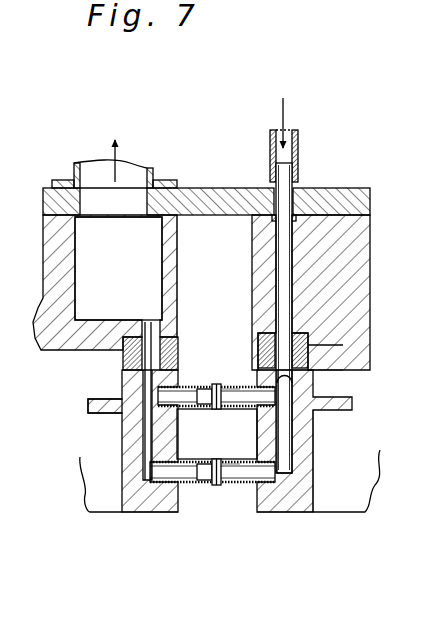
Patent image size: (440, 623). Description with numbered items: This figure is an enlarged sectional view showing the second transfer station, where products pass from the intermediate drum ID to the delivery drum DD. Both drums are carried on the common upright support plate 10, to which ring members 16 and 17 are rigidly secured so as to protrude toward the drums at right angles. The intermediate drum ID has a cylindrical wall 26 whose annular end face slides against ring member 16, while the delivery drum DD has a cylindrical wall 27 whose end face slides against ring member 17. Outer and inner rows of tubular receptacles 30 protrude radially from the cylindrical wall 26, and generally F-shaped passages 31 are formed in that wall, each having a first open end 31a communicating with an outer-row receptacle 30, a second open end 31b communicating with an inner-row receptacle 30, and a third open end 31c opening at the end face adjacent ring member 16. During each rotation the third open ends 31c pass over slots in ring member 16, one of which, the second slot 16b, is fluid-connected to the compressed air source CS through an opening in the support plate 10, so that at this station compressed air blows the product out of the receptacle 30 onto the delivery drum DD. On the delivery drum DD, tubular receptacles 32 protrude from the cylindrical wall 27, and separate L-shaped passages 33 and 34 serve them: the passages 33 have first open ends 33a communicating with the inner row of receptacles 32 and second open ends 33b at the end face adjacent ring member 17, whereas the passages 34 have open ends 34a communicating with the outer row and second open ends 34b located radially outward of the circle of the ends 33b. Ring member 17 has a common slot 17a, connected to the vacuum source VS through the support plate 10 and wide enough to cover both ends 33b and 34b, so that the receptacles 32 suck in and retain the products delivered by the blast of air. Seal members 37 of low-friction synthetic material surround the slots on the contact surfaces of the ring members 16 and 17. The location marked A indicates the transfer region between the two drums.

The support plate 10 is at (347, 197).
The ring member 16 is at (331, 291).
The second slot 16b is at (283, 245).
The ring member 17 is at (35, 293).
The common slot 17a is at (181, 254).
The cylindrical wall 26 is at (300, 487).
The cylindrical wall 27 is at (127, 513).
The tubular receptacles 30 is at (245, 378).
The F-shaped passages 31 is at (313, 418).
The first open end 31a is at (315, 454).
The second open end 31b is at (313, 372).
The third open end 31c is at (322, 370).
The tubular receptacles 32 is at (197, 380).
The passages 33 is at (143, 430).
The first open end 33a is at (138, 513).
The second open end 33b is at (120, 385).
The passages 34 is at (176, 372).
The open end 34a is at (217, 434).
The second open end 34b is at (146, 348).
The seal members 37 is at (132, 337).
The coupling A is at (215, 487).
The vacuum source VS is at (120, 157).
The compressed air source CS is at (281, 144).
The delivery drum DD is at (105, 481).
The intermediate drum ID is at (348, 470).